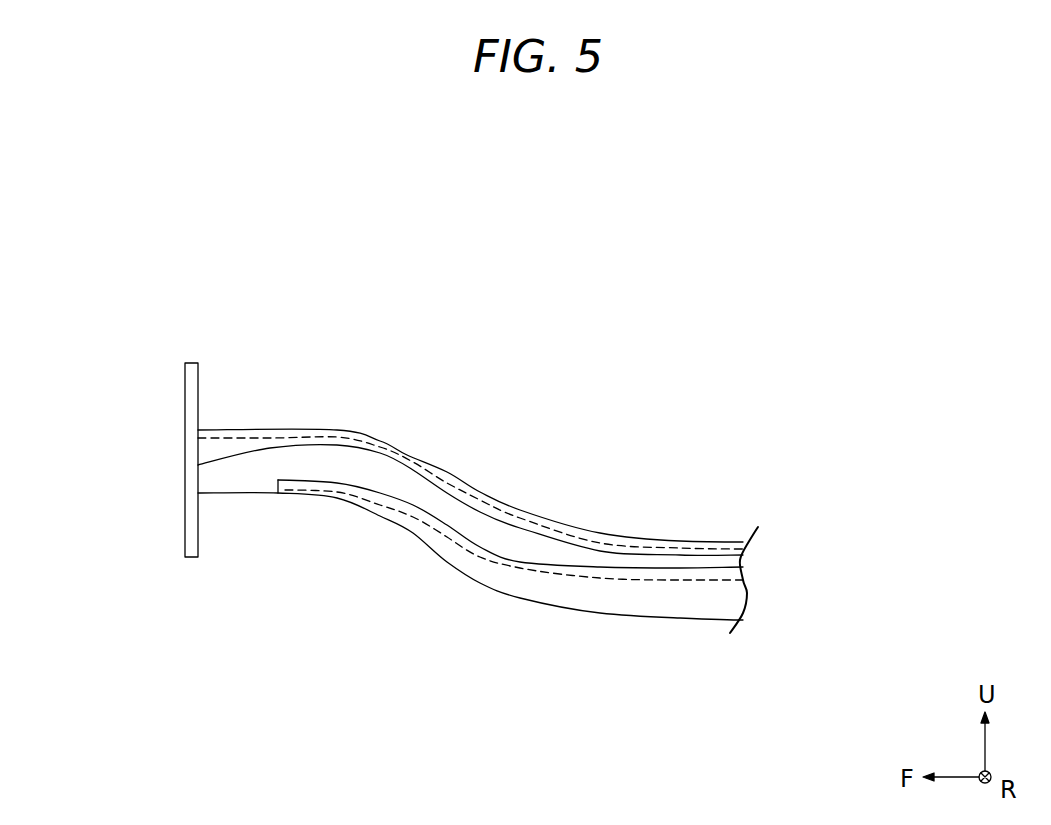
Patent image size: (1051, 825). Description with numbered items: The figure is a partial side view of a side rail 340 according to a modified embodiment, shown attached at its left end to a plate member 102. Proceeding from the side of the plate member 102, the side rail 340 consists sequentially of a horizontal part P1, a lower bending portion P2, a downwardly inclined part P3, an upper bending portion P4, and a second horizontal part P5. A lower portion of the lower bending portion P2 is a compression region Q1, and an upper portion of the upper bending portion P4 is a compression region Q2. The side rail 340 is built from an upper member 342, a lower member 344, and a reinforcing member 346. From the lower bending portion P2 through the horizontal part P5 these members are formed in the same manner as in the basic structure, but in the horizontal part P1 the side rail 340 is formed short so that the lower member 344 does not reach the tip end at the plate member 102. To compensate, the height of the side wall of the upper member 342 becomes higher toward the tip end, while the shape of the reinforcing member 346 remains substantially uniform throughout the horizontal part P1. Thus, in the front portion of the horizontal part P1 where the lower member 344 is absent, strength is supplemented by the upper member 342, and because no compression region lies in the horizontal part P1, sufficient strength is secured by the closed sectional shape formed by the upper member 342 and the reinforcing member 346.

The side rail 340 is at (540, 428).
The plate member 102 is at (185, 402).
The upper member 342 is at (718, 542).
The lower member 344 is at (700, 610).
The reinforcing member 346 is at (728, 563).
The horizontal part P1 is at (293, 382).
The lower bending portion P2 is at (403, 380).
The downwardly inclined part P3 is at (498, 430).
The upper bending portion P4 is at (593, 457).
The horizontal part P5 is at (702, 472).
The compression region Q1 is at (382, 527).
The compression region Q2 is at (593, 512).